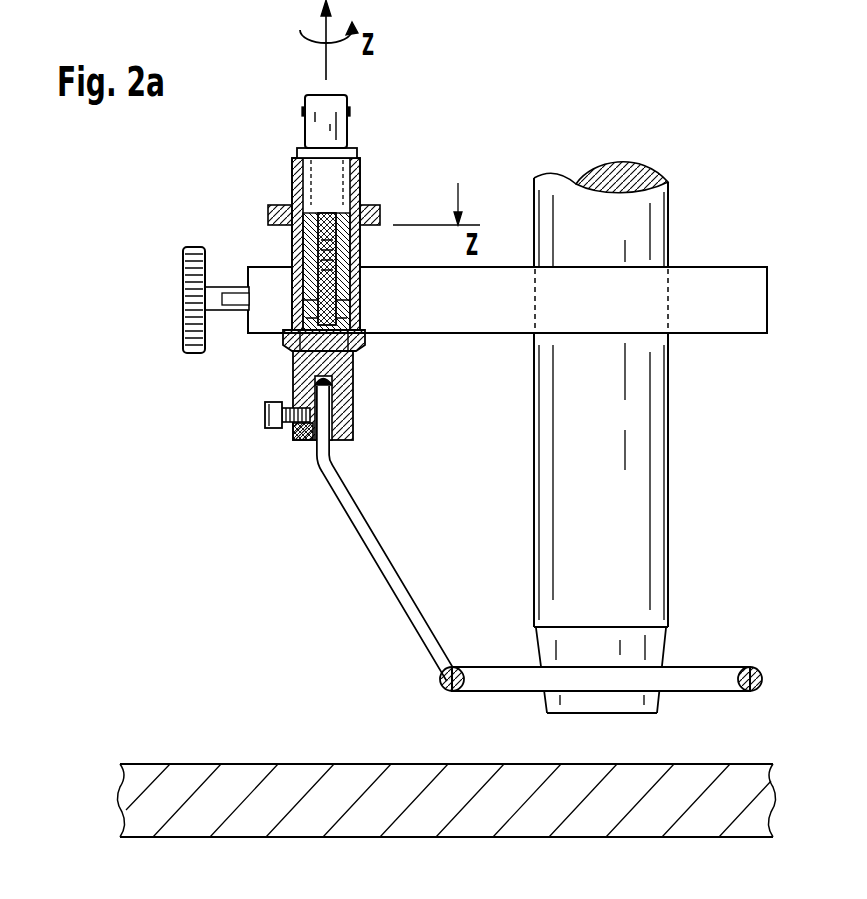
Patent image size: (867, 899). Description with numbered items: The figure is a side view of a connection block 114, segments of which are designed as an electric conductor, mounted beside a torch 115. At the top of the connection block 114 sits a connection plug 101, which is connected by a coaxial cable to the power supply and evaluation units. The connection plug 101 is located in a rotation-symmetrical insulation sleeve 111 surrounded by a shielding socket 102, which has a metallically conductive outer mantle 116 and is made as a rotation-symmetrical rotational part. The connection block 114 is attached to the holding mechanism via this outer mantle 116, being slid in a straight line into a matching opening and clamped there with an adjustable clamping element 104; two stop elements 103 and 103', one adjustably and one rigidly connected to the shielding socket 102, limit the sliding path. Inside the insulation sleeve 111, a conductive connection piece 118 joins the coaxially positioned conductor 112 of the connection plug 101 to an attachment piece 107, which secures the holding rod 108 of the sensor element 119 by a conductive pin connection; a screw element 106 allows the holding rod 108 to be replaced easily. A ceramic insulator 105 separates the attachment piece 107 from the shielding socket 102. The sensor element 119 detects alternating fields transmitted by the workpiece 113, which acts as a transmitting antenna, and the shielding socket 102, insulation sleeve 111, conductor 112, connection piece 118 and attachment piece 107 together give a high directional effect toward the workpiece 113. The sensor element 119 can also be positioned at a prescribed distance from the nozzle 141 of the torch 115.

The connection plug 101 is at (313, 128).
The shielding socket 102 is at (292, 178).
The stop element 103 is at (286, 197).
The stop element 103' is at (269, 366).
The adjustable clamping element 104 is at (195, 307).
The ceramic insulator 105 is at (292, 362).
The screw element 106 is at (273, 432).
The attachment piece 107 is at (297, 442).
The holding rod 108 is at (385, 567).
The insulation sleeve 111 is at (355, 165).
The conductor 112 is at (366, 209).
The workpiece 113 is at (180, 772).
The connection block 114 is at (166, 211).
The torch 115 is at (640, 525).
The outer mantle 116 is at (290, 253).
The connection piece 118 is at (360, 250).
The sensor element 119 is at (752, 666).
The nozzle 141 is at (653, 647).